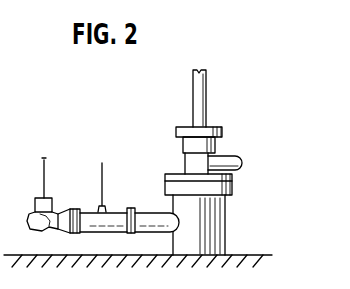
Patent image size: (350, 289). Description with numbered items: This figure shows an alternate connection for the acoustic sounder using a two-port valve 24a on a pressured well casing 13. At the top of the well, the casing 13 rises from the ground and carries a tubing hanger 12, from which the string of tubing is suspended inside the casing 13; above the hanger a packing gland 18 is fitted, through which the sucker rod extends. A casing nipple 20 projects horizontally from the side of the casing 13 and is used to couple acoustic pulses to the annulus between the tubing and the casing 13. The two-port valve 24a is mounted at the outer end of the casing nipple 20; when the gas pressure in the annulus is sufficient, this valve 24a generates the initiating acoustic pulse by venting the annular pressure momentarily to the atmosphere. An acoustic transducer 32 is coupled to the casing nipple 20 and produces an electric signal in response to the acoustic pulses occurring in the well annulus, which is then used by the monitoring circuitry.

The tubing hanger 12 is at (232, 190).
The casing 13 is at (226, 231).
The packing gland 18 is at (215, 127).
The casing nipple 20 is at (158, 212).
The two-port valve 24a is at (53, 213).
The acoustic transducer 32 is at (104, 206).